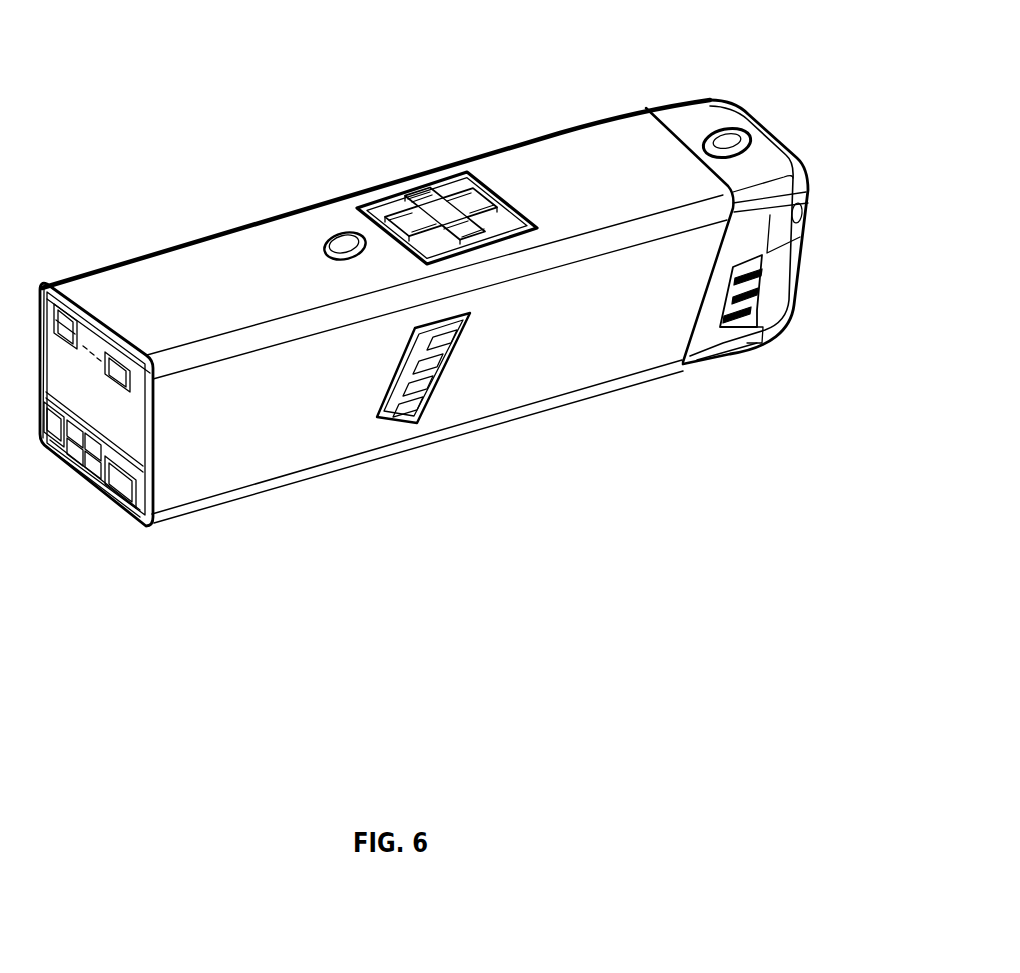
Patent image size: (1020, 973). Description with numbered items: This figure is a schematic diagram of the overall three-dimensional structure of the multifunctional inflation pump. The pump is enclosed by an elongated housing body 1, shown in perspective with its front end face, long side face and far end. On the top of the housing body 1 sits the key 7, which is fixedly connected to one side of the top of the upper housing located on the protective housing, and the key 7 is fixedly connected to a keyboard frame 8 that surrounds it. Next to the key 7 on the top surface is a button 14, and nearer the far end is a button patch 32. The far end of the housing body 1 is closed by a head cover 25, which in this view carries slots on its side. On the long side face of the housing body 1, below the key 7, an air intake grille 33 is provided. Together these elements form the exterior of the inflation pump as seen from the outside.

The housing body 1 is at (233, 455).
The key 7 is at (420, 192).
The keyboard frame 8 is at (516, 233).
The button 14 is at (330, 236).
The head cover 25 is at (723, 340).
The button patch 32 is at (730, 131).
The air intake grille 33 is at (411, 425).